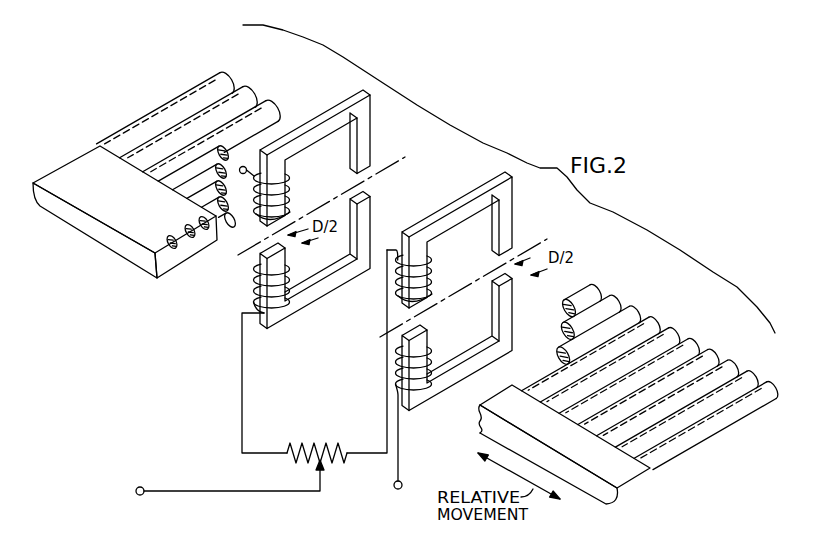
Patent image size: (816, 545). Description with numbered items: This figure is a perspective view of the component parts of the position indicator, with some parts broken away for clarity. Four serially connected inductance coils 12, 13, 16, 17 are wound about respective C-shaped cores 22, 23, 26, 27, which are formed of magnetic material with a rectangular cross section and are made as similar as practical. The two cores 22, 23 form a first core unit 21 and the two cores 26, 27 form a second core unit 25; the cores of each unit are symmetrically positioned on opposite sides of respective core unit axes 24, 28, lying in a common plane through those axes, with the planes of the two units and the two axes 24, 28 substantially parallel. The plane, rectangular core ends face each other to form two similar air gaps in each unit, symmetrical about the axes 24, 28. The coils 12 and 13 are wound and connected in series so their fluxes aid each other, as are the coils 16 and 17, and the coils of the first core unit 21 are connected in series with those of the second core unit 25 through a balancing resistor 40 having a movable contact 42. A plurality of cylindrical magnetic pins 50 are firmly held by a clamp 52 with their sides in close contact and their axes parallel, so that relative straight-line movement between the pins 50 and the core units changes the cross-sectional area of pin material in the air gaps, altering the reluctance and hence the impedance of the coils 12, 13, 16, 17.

The coil 12 is at (287, 183).
The coil 13 is at (287, 271).
The coil 16 is at (437, 270).
The coil 17 is at (437, 357).
The first core unit 21 is at (315, 201).
The core 22 is at (342, 103).
The core 23 is at (313, 302).
The core unit axis 24 is at (391, 160).
The second core unit 25 is at (457, 292).
The core 26 is at (433, 217).
The core 27 is at (456, 385).
The core unit axis 28 is at (532, 241).
The balancing resistor 40 is at (316, 444).
The movable contact 42 is at (326, 473).
The pins 50 is at (270, 99).
The clamp 52 is at (627, 482).